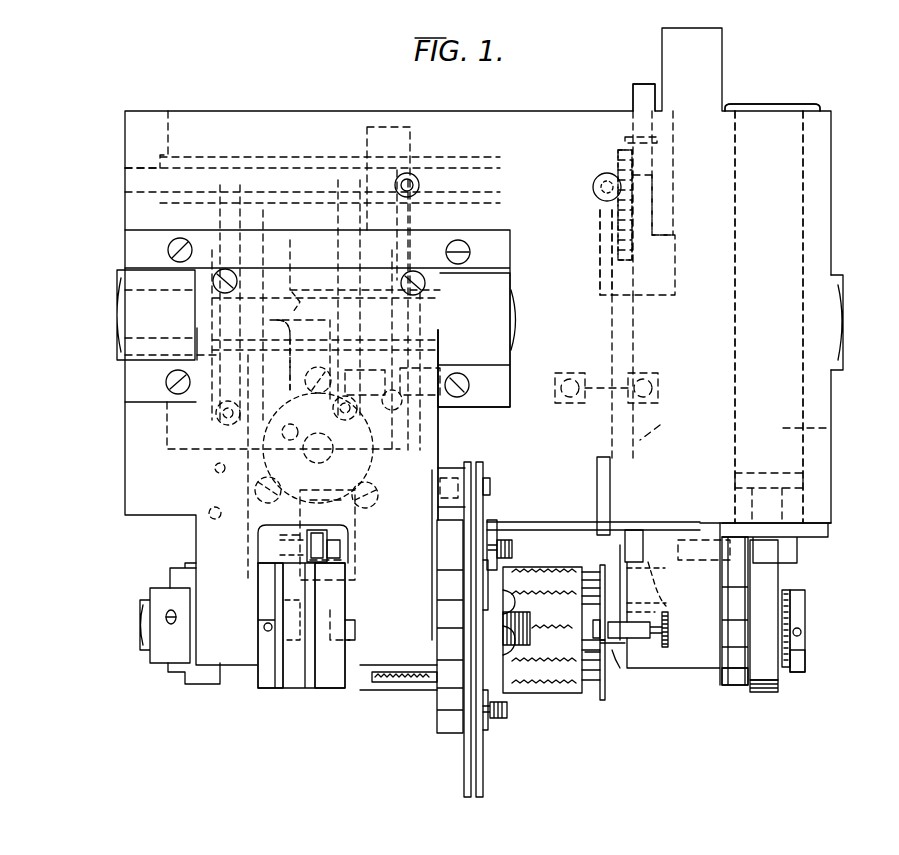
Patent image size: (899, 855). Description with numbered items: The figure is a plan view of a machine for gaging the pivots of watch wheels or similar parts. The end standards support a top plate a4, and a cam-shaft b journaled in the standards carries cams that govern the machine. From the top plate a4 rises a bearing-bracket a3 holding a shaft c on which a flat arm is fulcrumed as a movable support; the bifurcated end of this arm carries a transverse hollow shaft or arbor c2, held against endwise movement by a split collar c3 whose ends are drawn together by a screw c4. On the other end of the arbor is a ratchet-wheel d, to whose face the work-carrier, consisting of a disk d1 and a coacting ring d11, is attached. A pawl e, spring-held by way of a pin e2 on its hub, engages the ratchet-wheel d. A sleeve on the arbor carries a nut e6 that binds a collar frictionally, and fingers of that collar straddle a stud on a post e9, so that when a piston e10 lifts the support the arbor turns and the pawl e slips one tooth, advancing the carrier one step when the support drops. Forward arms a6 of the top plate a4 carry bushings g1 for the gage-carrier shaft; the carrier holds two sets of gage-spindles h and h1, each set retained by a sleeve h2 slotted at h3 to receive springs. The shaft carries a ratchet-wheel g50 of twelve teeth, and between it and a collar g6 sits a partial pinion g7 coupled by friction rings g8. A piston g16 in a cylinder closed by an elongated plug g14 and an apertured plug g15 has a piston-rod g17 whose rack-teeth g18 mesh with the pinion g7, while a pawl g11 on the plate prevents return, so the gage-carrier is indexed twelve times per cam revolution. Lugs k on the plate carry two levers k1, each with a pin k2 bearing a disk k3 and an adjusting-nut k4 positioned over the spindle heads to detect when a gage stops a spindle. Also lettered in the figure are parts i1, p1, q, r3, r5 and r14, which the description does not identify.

The bearing-bracket a3 is at (432, 244).
The top plate a4 is at (526, 125).
The arms a6 is at (672, 670).
The shaft b is at (115, 318).
The shaft c is at (515, 322).
The hollow shaft or arbor c2 is at (138, 622).
The split collar c3 is at (160, 650).
The screw c4 is at (438, 455).
The ratchet-wheel d is at (445, 725).
The disk d1 is at (466, 480).
The coacting ring d11 is at (480, 512).
The pawl e is at (295, 680).
The pin e2 is at (346, 597).
The nut e6 is at (266, 598).
The post e9 is at (317, 530).
The piston e10 is at (305, 443).
The bushings g1 is at (127, 182).
The collar g6 is at (800, 658).
The partial pinion g7 is at (768, 627).
The friction disks or rings g8 is at (790, 597).
The pawl g11 is at (738, 568).
The elongated plug g14 is at (765, 110).
The apertured plug g15 is at (820, 533).
The piston g16 is at (808, 428).
The piston-rod g17 is at (776, 575).
The rack-teeth g18 is at (764, 694).
The ratchet-wheel g50 is at (728, 686).
The gage-spindles h is at (518, 545).
The gage-spindles h1 is at (340, 550).
The sleeve h2 is at (392, 676).
The slot h3 is at (592, 683).
The rod i1 is at (600, 266).
The lugs k is at (643, 548).
The levers k1 is at (611, 510).
The pin k2 is at (635, 634).
The disk or head k3 is at (593, 630).
The adjusting-nut k4 is at (669, 628).
The rack p1 is at (616, 155).
The pawl q is at (270, 250).
The slide r3 is at (674, 256).
The stop block r5 is at (648, 98).
The rod r14 is at (638, 440).